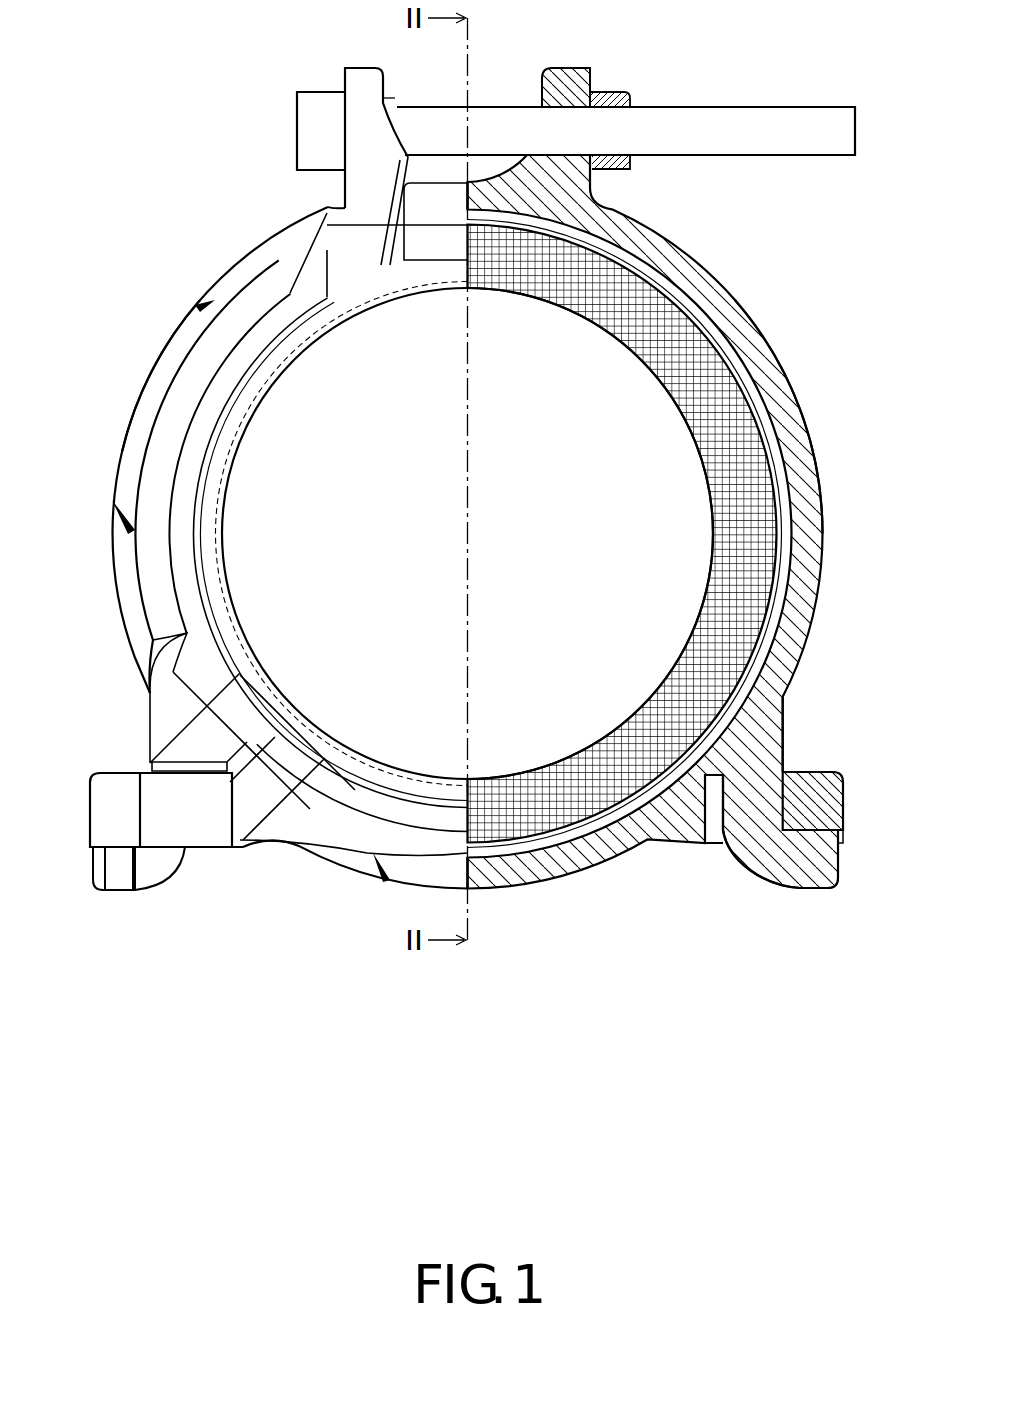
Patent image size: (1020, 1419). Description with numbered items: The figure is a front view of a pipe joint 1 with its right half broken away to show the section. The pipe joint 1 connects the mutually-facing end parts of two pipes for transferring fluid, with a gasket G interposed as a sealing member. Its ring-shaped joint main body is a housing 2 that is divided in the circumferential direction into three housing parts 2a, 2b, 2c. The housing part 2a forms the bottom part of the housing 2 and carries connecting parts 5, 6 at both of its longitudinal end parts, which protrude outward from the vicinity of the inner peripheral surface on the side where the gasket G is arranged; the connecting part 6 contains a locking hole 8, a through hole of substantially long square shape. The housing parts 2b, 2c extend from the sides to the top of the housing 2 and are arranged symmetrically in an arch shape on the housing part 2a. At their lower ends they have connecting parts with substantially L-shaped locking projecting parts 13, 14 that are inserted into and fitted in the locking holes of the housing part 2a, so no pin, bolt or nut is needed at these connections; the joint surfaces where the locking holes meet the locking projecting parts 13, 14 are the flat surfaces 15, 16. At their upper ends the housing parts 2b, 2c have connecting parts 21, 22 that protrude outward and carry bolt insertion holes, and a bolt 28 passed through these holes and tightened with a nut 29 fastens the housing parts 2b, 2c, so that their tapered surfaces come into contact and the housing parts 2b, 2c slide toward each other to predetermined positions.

The pipe joint 1 is at (188, 262).
The housing 2 is at (99, 430).
The housing part 2a is at (342, 852).
The housing part 2b is at (162, 378).
The housing part 2c is at (786, 380).
The gasket G is at (632, 362).
The connecting part 5 is at (108, 808).
The connecting part 6 is at (855, 818).
The locking hole 8 is at (767, 783).
The locking projecting part 13 is at (122, 872).
The locking projecting part 14 is at (765, 862).
The flat surface 15 is at (200, 770).
The flat surface 16 is at (178, 770).
The connecting part 21 is at (362, 72).
The connecting part 22 is at (567, 82).
The bolt 28 is at (315, 132).
The nut 29 is at (622, 93).